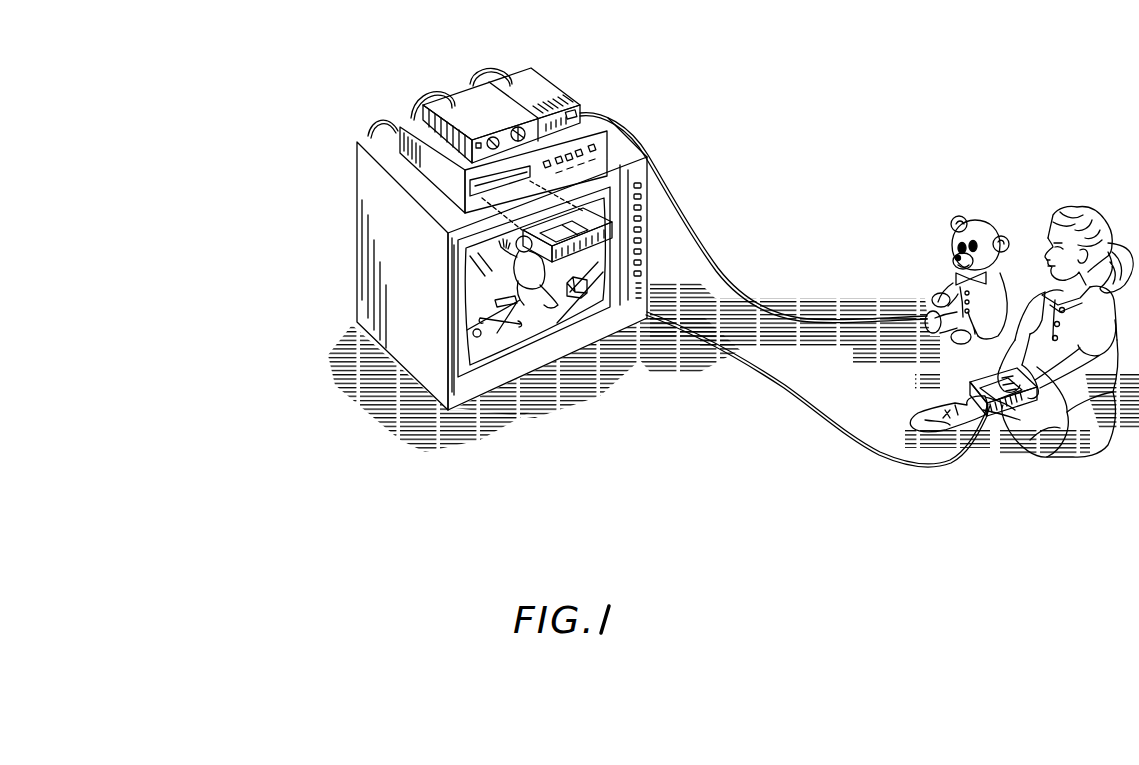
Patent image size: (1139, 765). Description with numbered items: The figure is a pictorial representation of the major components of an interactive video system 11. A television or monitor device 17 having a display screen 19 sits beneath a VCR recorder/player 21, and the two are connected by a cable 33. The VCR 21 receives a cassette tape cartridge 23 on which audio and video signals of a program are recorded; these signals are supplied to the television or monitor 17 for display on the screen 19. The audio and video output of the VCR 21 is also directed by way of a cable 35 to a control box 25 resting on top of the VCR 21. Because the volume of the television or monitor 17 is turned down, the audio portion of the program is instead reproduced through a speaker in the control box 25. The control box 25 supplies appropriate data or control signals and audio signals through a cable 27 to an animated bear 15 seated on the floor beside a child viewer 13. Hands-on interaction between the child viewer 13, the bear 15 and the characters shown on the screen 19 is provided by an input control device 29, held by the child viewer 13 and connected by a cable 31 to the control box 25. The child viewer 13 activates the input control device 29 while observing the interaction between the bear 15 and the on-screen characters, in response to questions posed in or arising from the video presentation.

The system 11 is at (858, 130).
The child viewer 13 is at (1062, 208).
The animated figure 15 is at (980, 216).
The television or monitor device 17 is at (372, 236).
The display screen 19 is at (549, 320).
The VCR recorder/player 21 is at (614, 140).
The cassette tape cartridge 23 is at (580, 246).
The control box 25 is at (562, 100).
The cable 27 is at (674, 206).
The input control device 29 is at (1010, 420).
The cable 31 is at (473, 76).
The cable 33 is at (372, 118).
The cable 35 is at (420, 96).